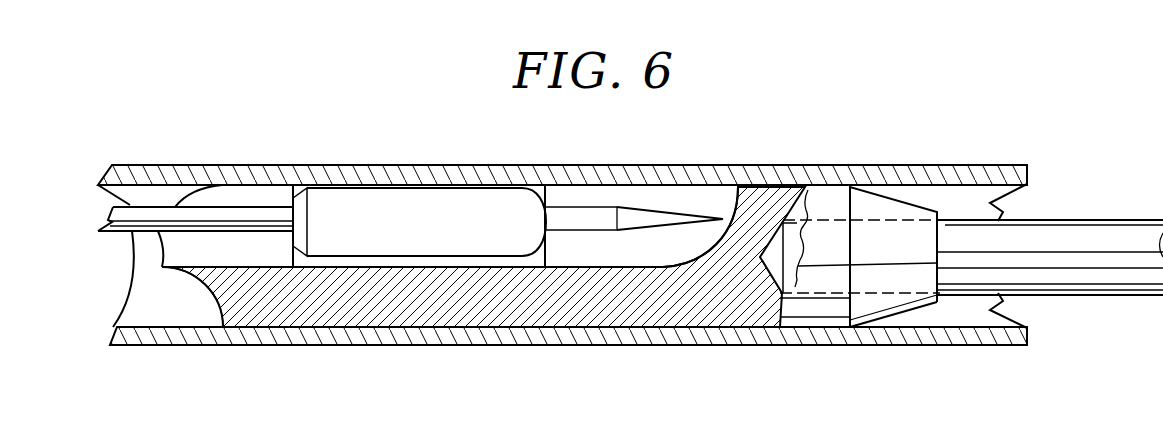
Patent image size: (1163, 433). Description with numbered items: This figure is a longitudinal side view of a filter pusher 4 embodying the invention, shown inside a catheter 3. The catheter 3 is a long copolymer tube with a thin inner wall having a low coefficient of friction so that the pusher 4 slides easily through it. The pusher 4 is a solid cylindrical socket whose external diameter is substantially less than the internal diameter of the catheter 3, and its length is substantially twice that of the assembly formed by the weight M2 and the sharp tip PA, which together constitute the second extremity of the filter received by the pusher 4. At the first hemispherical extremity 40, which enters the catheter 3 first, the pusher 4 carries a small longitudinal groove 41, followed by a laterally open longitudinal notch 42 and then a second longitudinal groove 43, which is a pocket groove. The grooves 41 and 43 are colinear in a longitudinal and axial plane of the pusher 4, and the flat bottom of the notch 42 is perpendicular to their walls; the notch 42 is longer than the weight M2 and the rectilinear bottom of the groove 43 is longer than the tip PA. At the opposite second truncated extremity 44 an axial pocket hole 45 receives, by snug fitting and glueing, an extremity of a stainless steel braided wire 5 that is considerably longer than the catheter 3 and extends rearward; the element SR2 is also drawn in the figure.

The catheter 3 is at (651, 338).
The filter pusher 4 is at (328, 318).
The stainless steel braided wire 5 is at (1112, 220).
The first hemispherical extremity 40 is at (164, 280).
The small longitudinal groove 41 is at (262, 191).
The laterally open longitudinal notch 42 is at (420, 267).
The second longitudinal groove 43 is at (736, 208).
The second truncated extremity 44 is at (892, 197).
The axial pocket hole 45 is at (818, 166).
The second slide rod SR2 is at (145, 215).
The weight M2 is at (447, 202).
The sharp tip PA is at (597, 218).